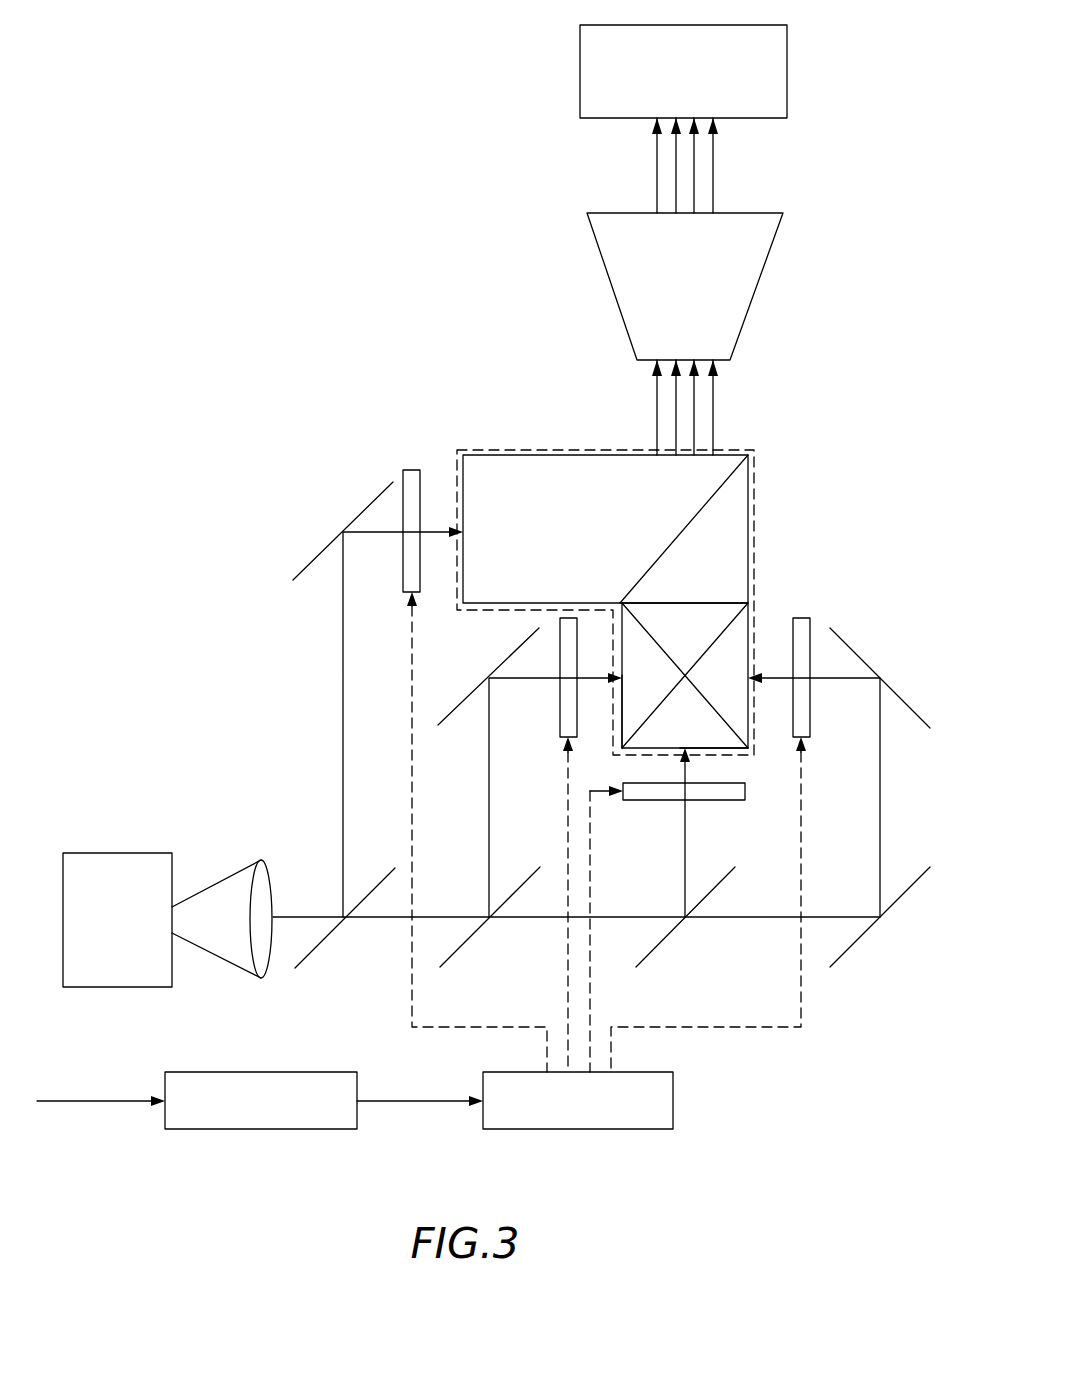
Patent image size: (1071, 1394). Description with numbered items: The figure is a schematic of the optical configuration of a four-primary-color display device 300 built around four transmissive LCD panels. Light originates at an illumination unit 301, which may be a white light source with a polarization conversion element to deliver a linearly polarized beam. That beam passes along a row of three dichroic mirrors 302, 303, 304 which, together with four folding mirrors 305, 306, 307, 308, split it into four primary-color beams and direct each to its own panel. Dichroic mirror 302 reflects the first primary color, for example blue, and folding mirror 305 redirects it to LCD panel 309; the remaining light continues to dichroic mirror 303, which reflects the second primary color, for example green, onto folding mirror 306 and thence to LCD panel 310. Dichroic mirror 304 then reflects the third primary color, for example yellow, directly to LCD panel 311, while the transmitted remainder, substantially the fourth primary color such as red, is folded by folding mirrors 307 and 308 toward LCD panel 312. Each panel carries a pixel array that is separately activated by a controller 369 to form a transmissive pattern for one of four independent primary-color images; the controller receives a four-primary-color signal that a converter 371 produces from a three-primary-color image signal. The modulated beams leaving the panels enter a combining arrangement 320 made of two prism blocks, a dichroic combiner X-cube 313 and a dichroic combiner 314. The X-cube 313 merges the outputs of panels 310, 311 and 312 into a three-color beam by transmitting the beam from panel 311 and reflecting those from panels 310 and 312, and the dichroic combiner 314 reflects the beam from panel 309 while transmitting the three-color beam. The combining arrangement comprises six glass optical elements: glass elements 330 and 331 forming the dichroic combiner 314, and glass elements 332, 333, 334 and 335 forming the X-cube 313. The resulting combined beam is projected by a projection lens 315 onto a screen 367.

The display device 300 is at (183, 122).
The illumination unit 301 is at (115, 853).
The dichroic mirror 302 is at (332, 937).
The dichroic mirror 303 is at (475, 935).
The dichroic mirror 304 is at (670, 935).
The folding mirror 305 is at (358, 520).
The folding mirror 306 is at (462, 700).
The folding mirror 307 is at (866, 935).
The folding mirror 308 is at (917, 700).
The transmissive LCD panel 309 is at (410, 468).
The transmissive LCD panel 310 is at (560, 695).
The transmissive LCD panel 311 is at (657, 802).
The transmissive LCD panel 312 is at (810, 730).
The dichroic combiner X-cube 313 is at (706, 673).
The dichroic combiner 314 is at (631, 494).
The projection lens 315 is at (765, 265).
The combining arrangement 320 is at (750, 442).
The glass element 330 is at (563, 487).
The glass element 331 is at (728, 497).
The glass element 332 is at (733, 658).
The glass element 333 is at (707, 737).
The glass element 334 is at (635, 707).
The glass element 335 is at (708, 612).
The screen 367 is at (787, 72).
The controller 369 is at (578, 1130).
The converter 371 is at (260, 1130).